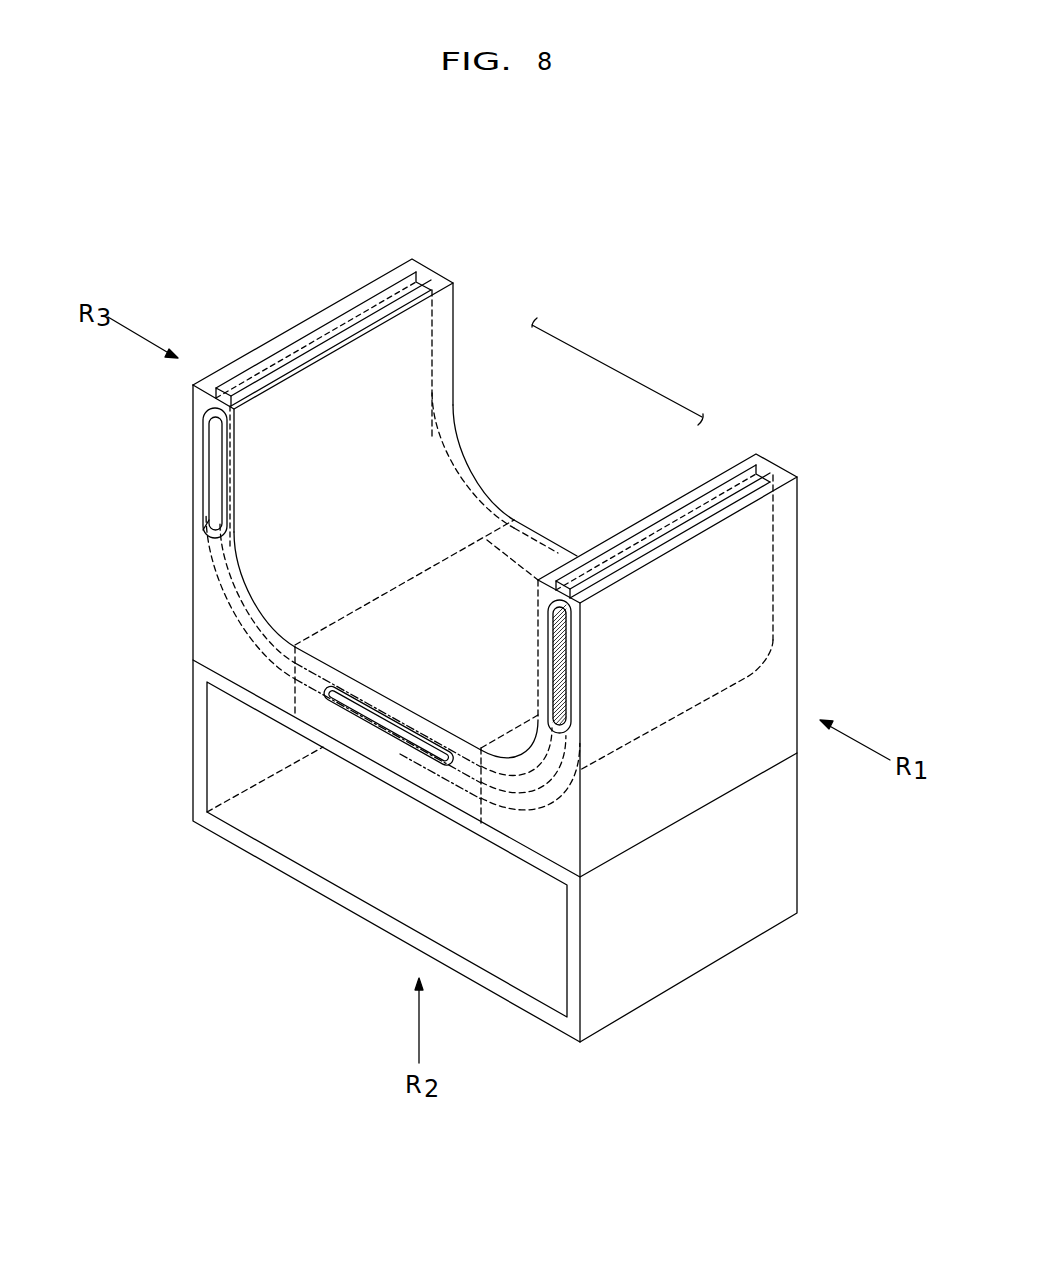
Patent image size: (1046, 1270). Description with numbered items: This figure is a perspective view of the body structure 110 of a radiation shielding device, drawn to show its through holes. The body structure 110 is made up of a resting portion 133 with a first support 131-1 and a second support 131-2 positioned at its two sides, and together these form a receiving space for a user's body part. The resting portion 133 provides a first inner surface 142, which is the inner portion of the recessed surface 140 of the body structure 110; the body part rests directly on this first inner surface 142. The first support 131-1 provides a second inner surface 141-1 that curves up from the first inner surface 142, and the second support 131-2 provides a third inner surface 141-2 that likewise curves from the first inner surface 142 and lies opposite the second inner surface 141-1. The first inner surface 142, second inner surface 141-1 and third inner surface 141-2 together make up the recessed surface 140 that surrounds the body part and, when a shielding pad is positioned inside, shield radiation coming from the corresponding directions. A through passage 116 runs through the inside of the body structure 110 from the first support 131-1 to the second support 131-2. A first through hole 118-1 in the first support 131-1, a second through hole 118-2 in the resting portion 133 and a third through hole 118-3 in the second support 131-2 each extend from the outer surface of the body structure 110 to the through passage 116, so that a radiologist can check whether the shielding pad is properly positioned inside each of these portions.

The body structure 110 is at (690, 313).
The through passage 116 is at (283, 625).
The first through hole 118-1 is at (203, 475).
The second through hole 118-2 is at (377, 722).
The third through hole 118-3 is at (580, 688).
The first support 131-1 is at (228, 640).
The second support 131-2 is at (533, 818).
The resting portion 133 is at (363, 742).
The recessed surface 140 is at (617, 371).
The second inner surface 141-1 is at (413, 402).
The third inner surface 141-2 is at (623, 528).
The first inner surface 142 is at (530, 560).